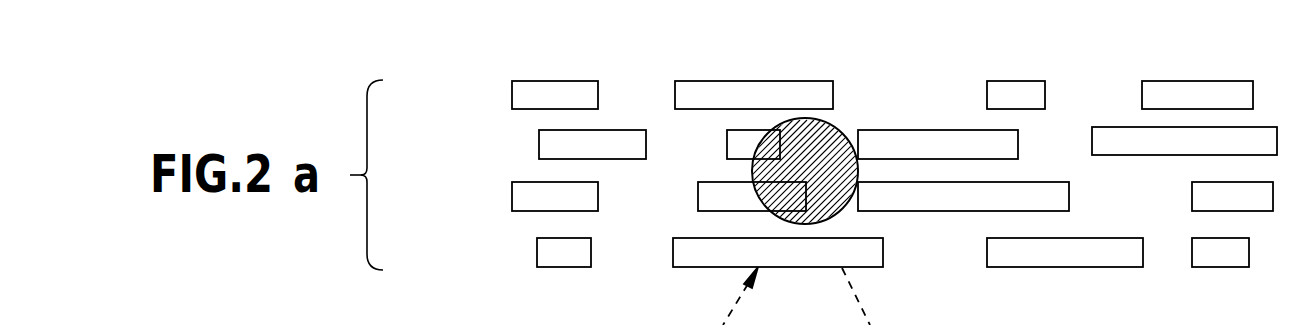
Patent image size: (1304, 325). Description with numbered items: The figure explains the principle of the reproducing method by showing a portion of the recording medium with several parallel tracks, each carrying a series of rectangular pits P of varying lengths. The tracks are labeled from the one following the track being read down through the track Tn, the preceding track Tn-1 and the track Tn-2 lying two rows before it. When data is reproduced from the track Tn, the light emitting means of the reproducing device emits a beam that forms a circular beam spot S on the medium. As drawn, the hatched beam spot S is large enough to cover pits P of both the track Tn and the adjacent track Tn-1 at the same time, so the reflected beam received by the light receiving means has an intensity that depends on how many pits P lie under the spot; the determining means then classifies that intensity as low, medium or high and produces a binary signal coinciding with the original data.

The beam spot S is at (838, 120).
The pit P is at (1176, 84).
The track Tn is at (832, 143).
The track Tn-1 is at (830, 196).
The track Tn-2 is at (818, 251).